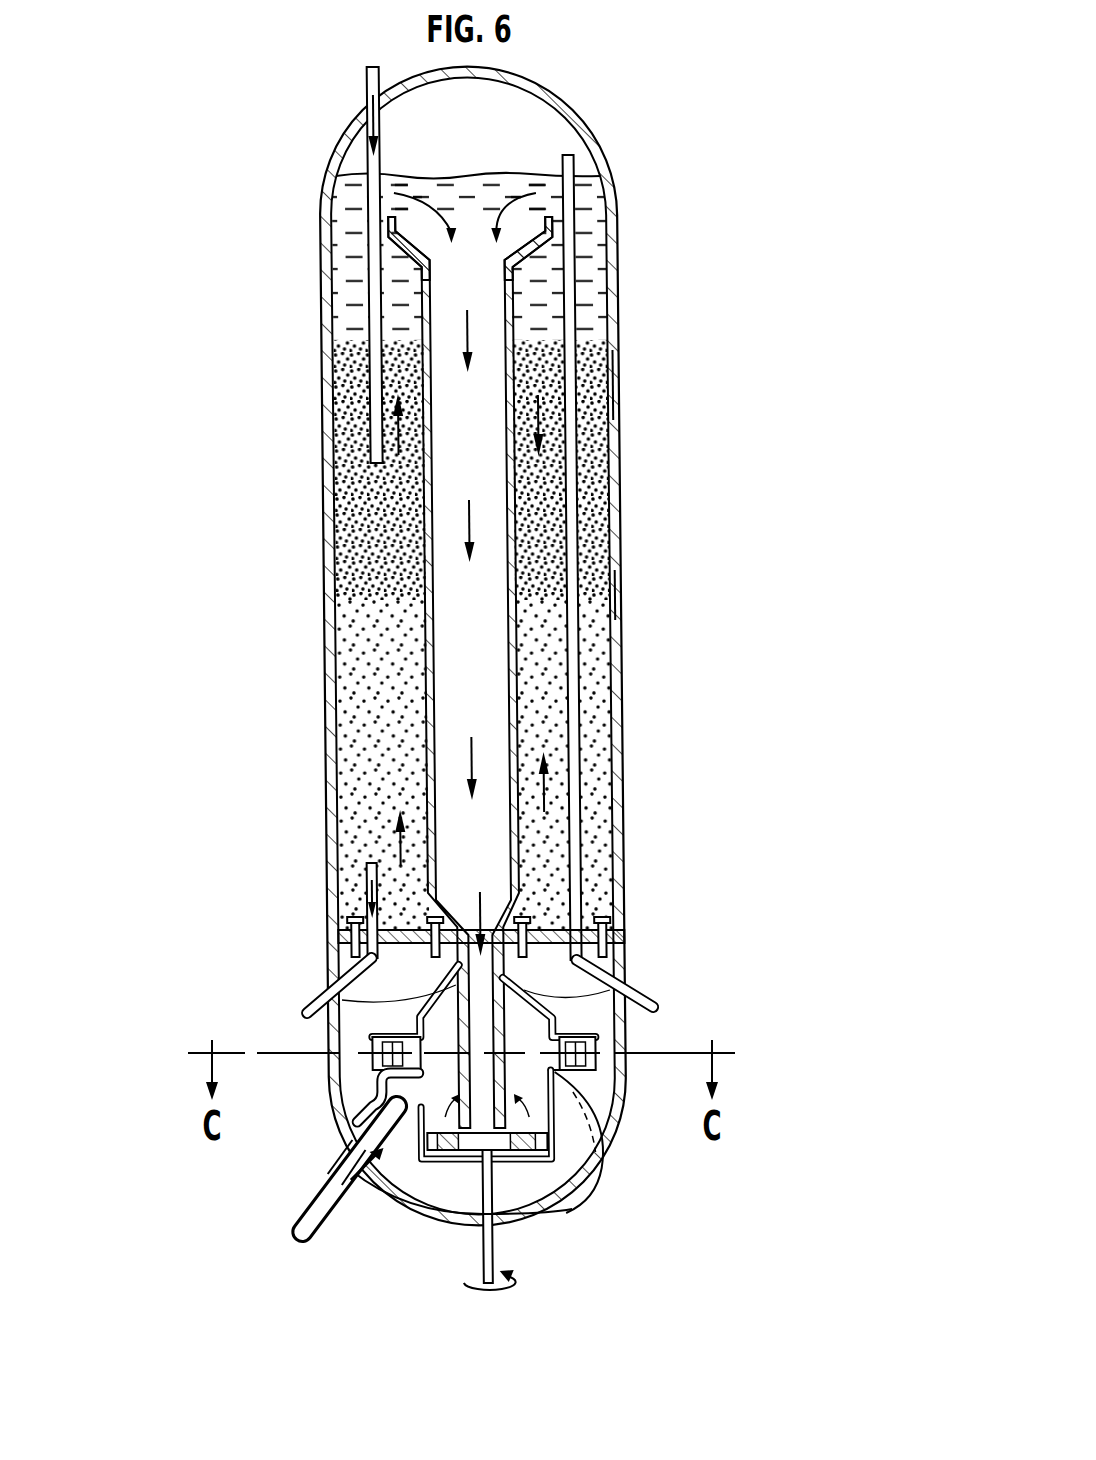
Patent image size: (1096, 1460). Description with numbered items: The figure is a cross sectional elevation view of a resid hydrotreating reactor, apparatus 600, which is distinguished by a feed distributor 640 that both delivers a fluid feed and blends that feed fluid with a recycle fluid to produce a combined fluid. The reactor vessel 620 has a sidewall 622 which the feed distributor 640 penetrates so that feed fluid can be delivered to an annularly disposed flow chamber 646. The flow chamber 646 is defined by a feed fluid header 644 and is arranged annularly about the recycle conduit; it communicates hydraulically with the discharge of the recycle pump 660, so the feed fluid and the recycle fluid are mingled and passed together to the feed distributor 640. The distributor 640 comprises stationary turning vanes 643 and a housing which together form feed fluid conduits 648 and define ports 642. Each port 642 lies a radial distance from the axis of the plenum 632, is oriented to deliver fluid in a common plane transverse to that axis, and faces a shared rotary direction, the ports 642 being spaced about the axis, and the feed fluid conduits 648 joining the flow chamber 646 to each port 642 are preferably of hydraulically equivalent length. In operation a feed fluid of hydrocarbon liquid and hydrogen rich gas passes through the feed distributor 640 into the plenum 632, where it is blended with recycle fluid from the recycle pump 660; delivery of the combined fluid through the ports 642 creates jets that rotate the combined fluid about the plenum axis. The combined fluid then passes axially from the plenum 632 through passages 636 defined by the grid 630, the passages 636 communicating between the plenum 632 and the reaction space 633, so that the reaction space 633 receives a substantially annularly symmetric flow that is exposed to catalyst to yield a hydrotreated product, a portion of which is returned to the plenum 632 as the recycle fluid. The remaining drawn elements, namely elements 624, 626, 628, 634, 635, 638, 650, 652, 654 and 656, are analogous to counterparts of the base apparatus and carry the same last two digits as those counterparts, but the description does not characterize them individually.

The apparatus 600 is at (497, 672).
The reactor vessel 620 is at (630, 382).
The sidewall 622 is at (616, 427).
The impeller shaft 624 is at (562, 1212).
The reactor shell 626 is at (586, 100).
The catalyst bed 628 is at (553, 512).
The grid 630 is at (590, 900).
The plenum 632 is at (590, 1150).
The reaction space 633 is at (626, 602).
The inlet pipe 634 is at (400, 202).
The annular catalyst zone 635 is at (547, 873).
The passages 636 is at (440, 952).
The bolts 638 is at (432, 917).
The feed distributor 640 is at (400, 1019).
The ports 642 is at (378, 1050).
The stationary turning vanes 643 is at (652, 1000).
The feed fluid header 644 is at (343, 1140).
The flow chamber 646 is at (518, 1150).
The feed fluid conduits 648 is at (345, 1090).
The annular space 650 is at (420, 722).
The draft tube 652 is at (482, 615).
The bottom plate 654 is at (563, 1211).
The funnel 656 is at (392, 227).
The recycle pump 660 is at (440, 1162).